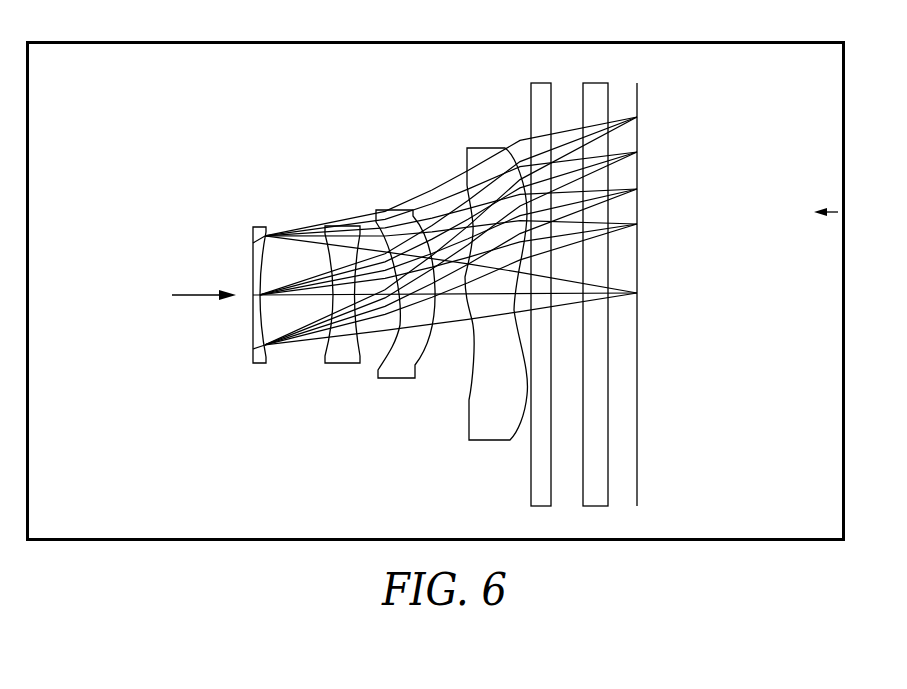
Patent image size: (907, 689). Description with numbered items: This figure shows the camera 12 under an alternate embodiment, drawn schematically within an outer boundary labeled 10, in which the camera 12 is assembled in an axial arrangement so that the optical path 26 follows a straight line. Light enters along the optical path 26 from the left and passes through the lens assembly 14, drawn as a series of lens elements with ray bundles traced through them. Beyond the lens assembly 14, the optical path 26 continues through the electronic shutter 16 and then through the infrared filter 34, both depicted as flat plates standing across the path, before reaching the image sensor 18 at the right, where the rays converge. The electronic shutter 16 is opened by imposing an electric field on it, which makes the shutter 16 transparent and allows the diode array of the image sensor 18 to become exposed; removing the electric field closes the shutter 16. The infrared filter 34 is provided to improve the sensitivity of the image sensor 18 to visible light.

The projection display system 10 is at (829, 42).
The camera 12 is at (838, 212).
The lens assembly 14 is at (291, 390).
The electronic shutter 16 is at (546, 82).
The image sensor 18 is at (640, 484).
The optical path 26 is at (194, 291).
The infrared (IR) filter 34 is at (592, 82).